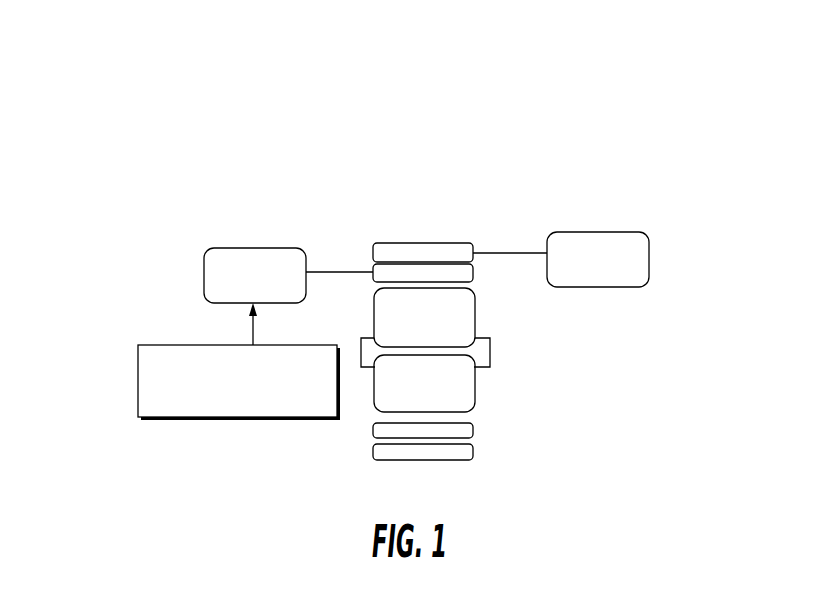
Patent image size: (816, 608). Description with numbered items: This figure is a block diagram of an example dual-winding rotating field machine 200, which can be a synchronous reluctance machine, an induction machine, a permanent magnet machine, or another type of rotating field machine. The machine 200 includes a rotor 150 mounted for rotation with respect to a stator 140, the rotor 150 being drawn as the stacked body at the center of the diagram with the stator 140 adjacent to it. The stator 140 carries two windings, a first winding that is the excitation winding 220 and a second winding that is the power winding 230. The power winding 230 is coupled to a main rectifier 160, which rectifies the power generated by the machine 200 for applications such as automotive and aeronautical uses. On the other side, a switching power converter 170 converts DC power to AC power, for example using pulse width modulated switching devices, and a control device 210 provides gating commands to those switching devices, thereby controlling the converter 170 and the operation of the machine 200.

The dual-winding rotating field machine 200 is at (629, 62).
The control device 210 is at (138, 380).
The switching power converter 170 is at (237, 248).
The main rectifier 160 is at (618, 232).
The excitation winding 220 is at (450, 245).
The power winding 230 is at (458, 243).
The stator 140 is at (476, 272).
The rotor 150 is at (372, 402).